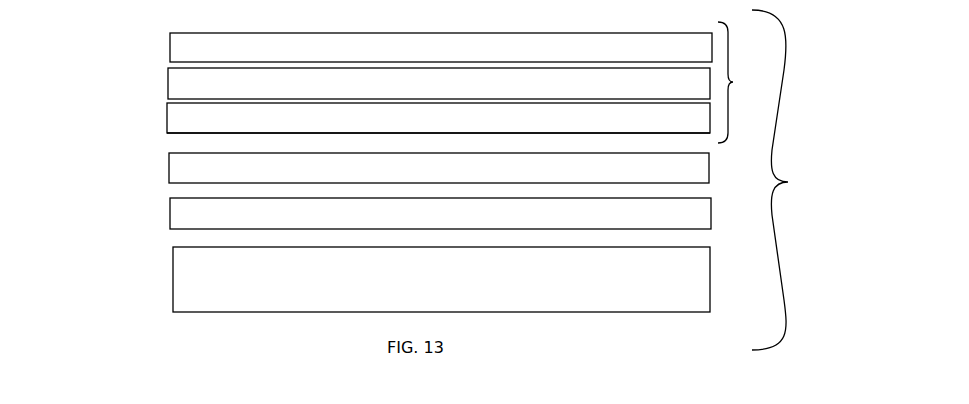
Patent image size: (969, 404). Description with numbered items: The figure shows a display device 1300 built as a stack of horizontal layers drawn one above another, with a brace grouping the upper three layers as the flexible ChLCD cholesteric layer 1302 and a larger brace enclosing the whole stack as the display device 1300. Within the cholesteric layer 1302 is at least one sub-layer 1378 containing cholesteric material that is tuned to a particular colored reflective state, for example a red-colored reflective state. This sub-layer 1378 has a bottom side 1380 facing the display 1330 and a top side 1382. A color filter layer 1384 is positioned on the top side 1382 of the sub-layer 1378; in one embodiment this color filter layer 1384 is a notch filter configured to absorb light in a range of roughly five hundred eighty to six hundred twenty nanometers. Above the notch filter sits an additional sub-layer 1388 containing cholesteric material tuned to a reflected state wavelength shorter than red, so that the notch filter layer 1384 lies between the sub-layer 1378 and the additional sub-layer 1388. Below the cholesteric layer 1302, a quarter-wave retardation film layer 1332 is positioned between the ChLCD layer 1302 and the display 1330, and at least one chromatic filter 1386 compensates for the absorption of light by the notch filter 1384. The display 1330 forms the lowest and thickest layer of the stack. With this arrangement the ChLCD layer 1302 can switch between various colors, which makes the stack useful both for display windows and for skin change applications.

The additional sub-layer 1388 is at (170, 49).
The color filter layer 1384 is at (168, 82).
The top side 1382 is at (168, 100).
The sub-layer 1378 is at (167, 122).
The bottom side 1380 is at (167, 132).
The λ/4 retardation film layer 1332 is at (169, 177).
The chromatic filter 1386 is at (170, 212).
The display 1330 is at (173, 277).
The flexible ChLCD cholesteric layer 1302 is at (747, 82).
The display device 1300 is at (792, 180).